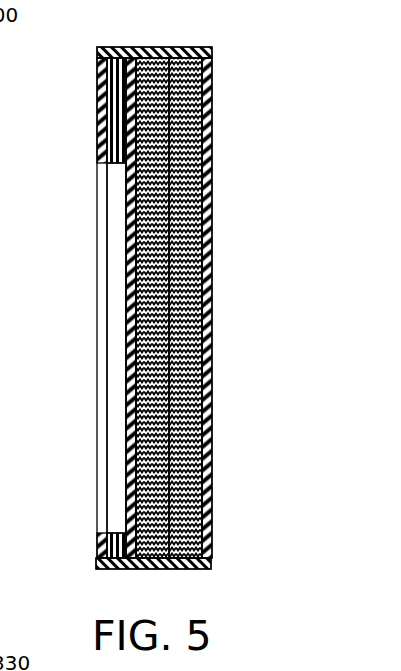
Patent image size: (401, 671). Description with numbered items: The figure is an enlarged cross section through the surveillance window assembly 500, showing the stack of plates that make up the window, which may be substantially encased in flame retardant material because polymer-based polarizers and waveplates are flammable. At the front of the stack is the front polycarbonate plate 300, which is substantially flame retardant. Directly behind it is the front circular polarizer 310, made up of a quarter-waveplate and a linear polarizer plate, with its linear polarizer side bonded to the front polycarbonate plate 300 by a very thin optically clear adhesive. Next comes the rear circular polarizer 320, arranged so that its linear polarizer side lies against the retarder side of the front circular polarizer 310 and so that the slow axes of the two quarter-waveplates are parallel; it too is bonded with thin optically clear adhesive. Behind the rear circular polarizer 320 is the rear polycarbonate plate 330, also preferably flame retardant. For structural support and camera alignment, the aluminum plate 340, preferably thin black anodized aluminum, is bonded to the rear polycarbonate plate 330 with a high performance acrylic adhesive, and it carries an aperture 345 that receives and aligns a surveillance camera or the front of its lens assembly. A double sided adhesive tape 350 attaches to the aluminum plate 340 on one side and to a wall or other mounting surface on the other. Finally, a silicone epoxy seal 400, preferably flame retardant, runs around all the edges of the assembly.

The front polycarbonate plate 300 is at (213, 100).
The front circular polarizer 310 is at (200, 47).
The rear circular polarizer 320 is at (165, 47).
The rear polycarbonate plate 330 is at (131, 47).
The aluminum plate 340 is at (105, 569).
The aperture 345 is at (97, 353).
The double sided adhesive tape 350 is at (97, 102).
The silicone epoxy seal 400 is at (110, 47).
The surveillance window assembly 500 is at (277, 273).